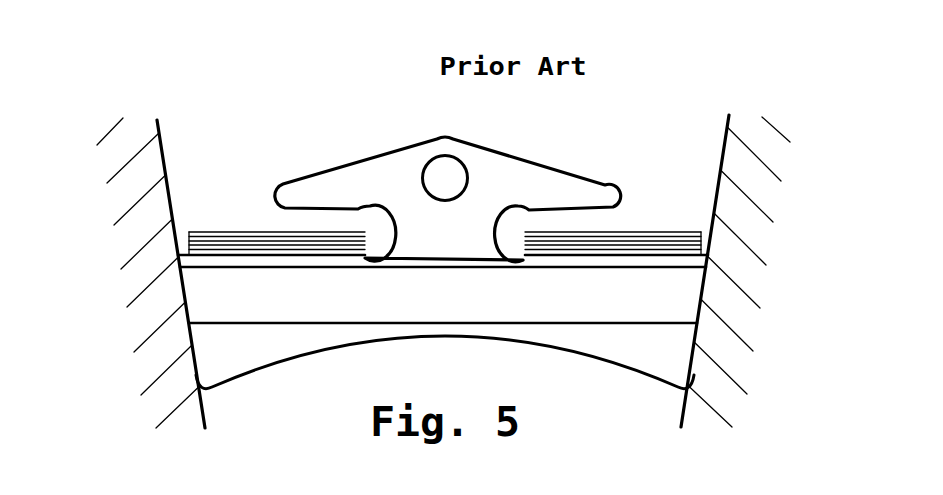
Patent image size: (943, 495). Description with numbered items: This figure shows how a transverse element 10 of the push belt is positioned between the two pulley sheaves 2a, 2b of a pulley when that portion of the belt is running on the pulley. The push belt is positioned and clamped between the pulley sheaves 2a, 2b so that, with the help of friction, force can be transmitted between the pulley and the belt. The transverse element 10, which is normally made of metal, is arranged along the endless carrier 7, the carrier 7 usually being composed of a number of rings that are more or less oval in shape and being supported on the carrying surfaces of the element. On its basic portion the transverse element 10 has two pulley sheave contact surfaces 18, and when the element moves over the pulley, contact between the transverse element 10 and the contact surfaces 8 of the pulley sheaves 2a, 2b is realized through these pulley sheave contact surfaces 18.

The pulley sheave 2a is at (753, 167).
The pulley sheave 2b is at (135, 162).
The endless carrier 7 is at (643, 243).
The contact surface 8 is at (168, 192).
The transverse element 10 is at (367, 180).
The pulley sheave contact surface 18 is at (705, 287).